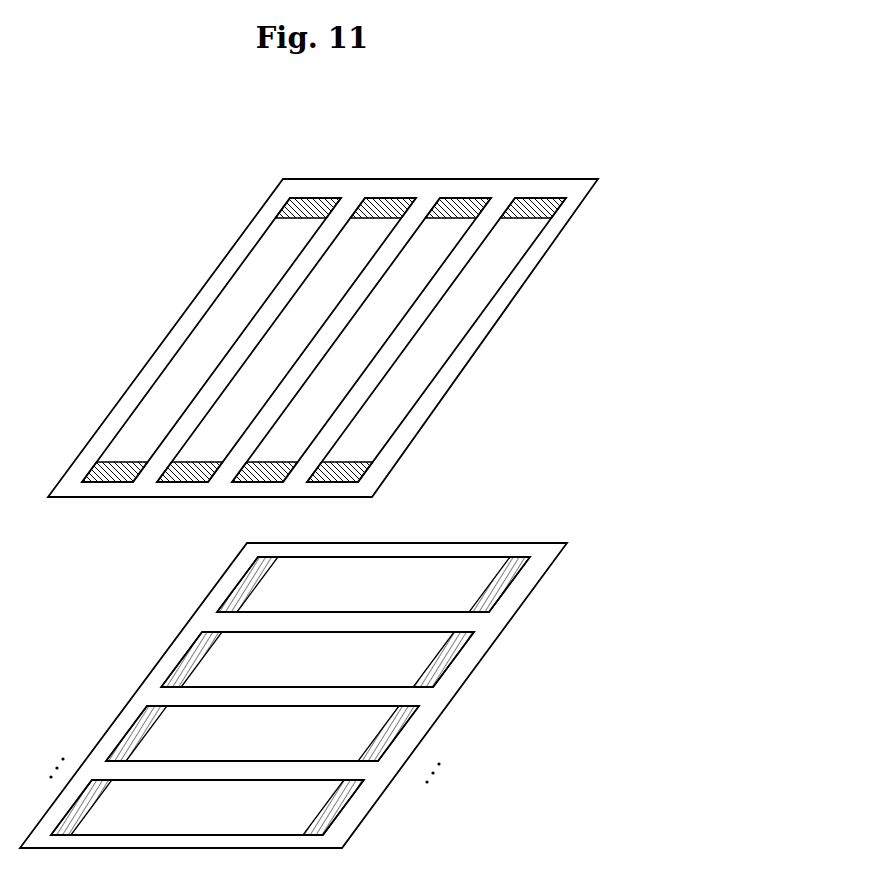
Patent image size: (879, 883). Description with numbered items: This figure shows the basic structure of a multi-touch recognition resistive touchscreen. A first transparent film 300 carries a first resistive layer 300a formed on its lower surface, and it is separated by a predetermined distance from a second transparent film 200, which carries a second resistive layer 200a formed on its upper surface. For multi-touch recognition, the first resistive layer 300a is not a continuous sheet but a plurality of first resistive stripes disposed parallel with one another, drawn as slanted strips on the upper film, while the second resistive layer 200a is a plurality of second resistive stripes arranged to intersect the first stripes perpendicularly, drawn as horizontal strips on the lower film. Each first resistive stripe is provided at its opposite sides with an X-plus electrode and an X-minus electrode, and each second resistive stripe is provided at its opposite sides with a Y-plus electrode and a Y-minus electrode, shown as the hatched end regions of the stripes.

The first transparent film 300 is at (363, 179).
The first resistive layer 300a is at (472, 322).
The second transparent film 200 is at (420, 543).
The second resistive layer 200a is at (483, 557).